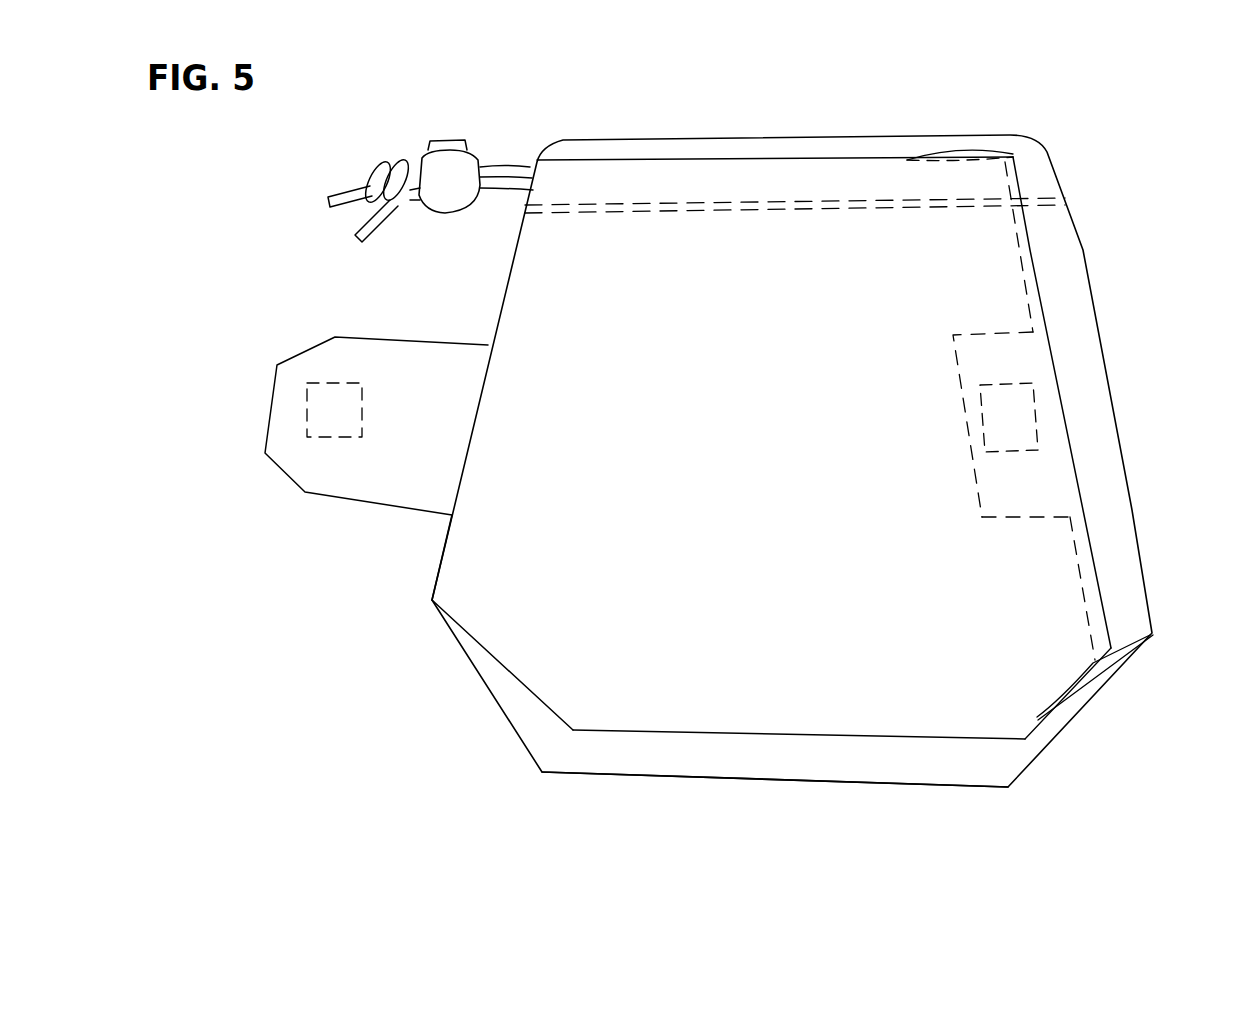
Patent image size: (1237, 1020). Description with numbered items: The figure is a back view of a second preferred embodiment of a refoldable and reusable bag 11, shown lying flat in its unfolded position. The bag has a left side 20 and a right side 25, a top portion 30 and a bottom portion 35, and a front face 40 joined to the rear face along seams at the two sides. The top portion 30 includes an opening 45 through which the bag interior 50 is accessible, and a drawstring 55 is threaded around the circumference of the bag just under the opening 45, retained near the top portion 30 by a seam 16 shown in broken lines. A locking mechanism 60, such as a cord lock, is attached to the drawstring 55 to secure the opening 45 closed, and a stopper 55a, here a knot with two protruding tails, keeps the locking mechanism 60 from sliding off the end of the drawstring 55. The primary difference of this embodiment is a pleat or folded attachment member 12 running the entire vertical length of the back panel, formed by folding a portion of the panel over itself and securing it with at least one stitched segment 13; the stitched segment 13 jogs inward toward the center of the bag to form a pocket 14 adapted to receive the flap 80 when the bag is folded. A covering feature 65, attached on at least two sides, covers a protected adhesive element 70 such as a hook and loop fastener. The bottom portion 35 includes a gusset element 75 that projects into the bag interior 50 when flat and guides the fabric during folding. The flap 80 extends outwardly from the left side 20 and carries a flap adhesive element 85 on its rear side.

The refoldable and reusable bag 11 is at (1085, 722).
The folded attachment member 12 is at (1042, 290).
The stitched segment 13 is at (1077, 568).
The pocket 14 is at (955, 399).
The side seam 16 is at (920, 200).
The left side 20 is at (1138, 445).
The right side 25 is at (435, 578).
The top portion 30 is at (625, 145).
The bottom portion 35 is at (612, 777).
The front face 40 is at (577, 650).
The opening 45 is at (867, 148).
The bag interior 50 is at (752, 150).
The drawstring 55 is at (500, 163).
The stopper 55a is at (367, 160).
The locking mechanism 60 is at (430, 142).
The covering feature 65 is at (1022, 482).
The protected adhesive element 70 is at (1027, 407).
The gusset element 75 is at (705, 757).
The flap 80 is at (397, 465).
The flap adhesive element 85 is at (337, 418).